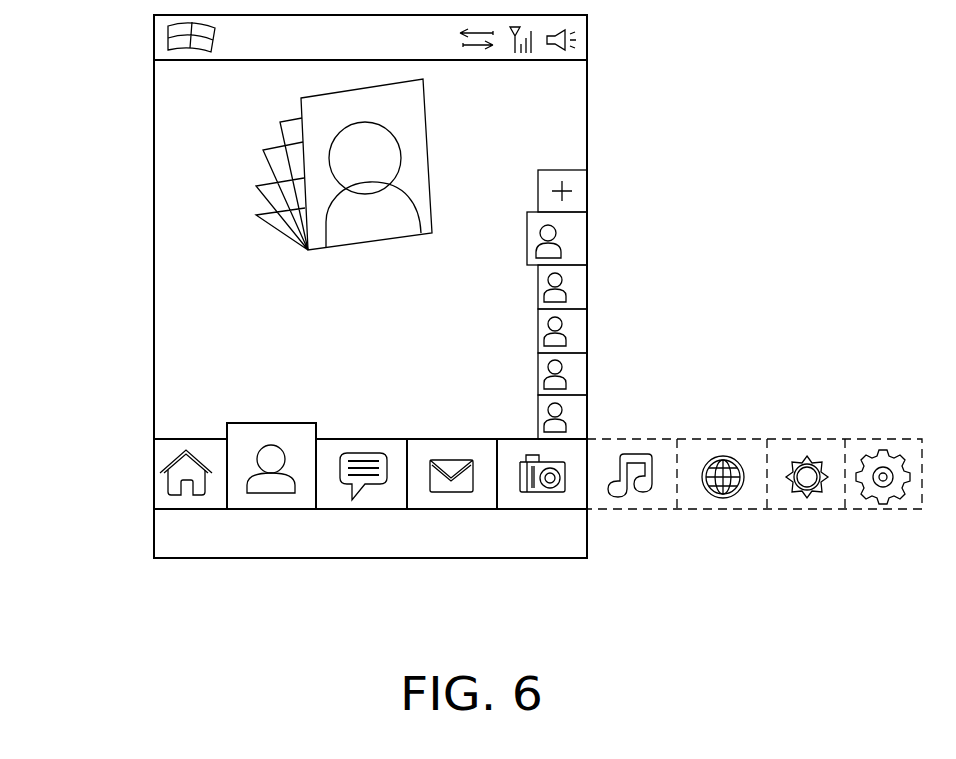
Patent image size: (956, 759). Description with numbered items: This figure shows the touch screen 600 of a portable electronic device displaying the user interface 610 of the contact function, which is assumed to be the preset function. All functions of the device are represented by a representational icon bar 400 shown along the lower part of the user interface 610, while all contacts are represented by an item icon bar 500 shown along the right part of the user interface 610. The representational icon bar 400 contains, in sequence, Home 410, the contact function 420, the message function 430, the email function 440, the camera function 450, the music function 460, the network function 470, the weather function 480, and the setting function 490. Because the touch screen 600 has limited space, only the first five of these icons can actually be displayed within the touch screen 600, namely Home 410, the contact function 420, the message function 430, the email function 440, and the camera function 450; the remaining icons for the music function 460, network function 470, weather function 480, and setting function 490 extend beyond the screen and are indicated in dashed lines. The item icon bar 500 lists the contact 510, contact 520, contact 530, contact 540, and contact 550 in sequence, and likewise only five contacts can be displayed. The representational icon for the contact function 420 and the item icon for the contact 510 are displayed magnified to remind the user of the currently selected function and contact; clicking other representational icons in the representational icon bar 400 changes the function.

The representational icon bar 400 is at (573, 498).
The Home 410 is at (197, 439).
The contact function 420 is at (245, 423).
The message function 430 is at (377, 439).
The email function 440 is at (449, 439).
The camera function 450 is at (518, 439).
The music function 460 is at (657, 437).
The network function 470 is at (748, 437).
The weather function 480 is at (807, 437).
The setting function 490 is at (882, 437).
The item icon bar 500 is at (567, 221).
The contact 510 is at (587, 250).
The contact 520 is at (587, 290).
The contact 530 is at (587, 340).
The contact 540 is at (587, 380).
The contact 550 is at (587, 418).
The touch screen 600 is at (154, 173).
The user interface 610 is at (175, 246).